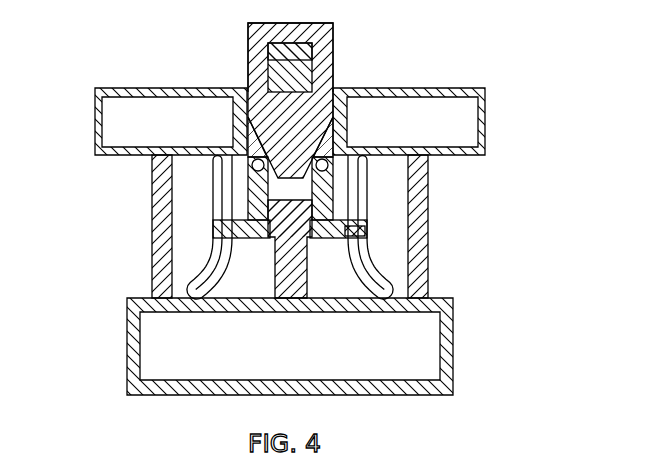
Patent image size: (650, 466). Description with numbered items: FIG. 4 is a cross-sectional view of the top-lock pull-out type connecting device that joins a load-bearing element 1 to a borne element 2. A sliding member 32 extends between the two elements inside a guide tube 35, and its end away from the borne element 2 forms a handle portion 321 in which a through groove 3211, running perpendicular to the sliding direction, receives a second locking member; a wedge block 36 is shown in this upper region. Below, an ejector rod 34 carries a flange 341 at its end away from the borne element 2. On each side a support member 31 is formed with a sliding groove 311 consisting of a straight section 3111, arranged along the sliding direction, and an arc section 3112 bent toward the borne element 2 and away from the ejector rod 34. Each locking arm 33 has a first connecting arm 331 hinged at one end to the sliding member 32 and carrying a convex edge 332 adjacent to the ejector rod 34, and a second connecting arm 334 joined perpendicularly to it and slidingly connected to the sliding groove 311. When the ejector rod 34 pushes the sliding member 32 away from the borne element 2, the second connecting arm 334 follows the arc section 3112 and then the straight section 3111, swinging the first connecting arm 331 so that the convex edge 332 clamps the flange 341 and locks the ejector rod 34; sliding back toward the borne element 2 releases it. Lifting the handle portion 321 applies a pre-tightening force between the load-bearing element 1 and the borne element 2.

The load-bearing element 1 is at (441, 89).
The borne element 2 is at (449, 332).
The support member 31 is at (162, 214).
The sliding groove 311 is at (216, 227).
The straight section 3111 is at (213, 193).
The arc section 3112 is at (203, 275).
The sliding member 32 is at (247, 153).
The handle portion 321 is at (297, 32).
The through groove 3211 is at (312, 56).
The locking arm 33 is at (372, 203).
The first connecting arm 331 is at (332, 198).
The convex edge 332 is at (305, 220).
The second connecting arm 334 is at (365, 233).
The ejector rod 34 is at (273, 280).
The flange 341 is at (275, 237).
The guide tube 35 is at (247, 118).
The wedge block 36 is at (270, 53).